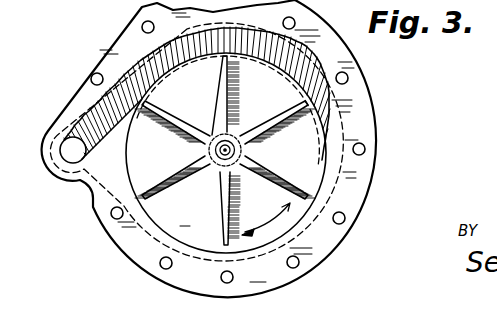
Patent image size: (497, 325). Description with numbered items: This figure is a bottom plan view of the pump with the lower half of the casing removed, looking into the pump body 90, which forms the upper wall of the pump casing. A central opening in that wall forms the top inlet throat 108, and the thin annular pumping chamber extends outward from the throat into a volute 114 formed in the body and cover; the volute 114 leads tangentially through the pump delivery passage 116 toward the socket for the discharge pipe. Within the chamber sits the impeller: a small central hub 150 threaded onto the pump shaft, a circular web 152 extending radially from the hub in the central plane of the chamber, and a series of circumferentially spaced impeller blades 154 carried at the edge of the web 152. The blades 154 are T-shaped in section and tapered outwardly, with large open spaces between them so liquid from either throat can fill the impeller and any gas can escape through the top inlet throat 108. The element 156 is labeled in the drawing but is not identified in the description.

The pump casing 90 is at (378, 148).
The casing cover 108 is at (200, 130).
The inlet channel 114 is at (328, 113).
The inlet port 116 is at (70, 158).
The impeller rotor 150 is at (227, 150).
The rotor hub 152 is at (254, 146).
The impeller vane 154 is at (178, 121).
The channel wall 156 is at (196, 80).